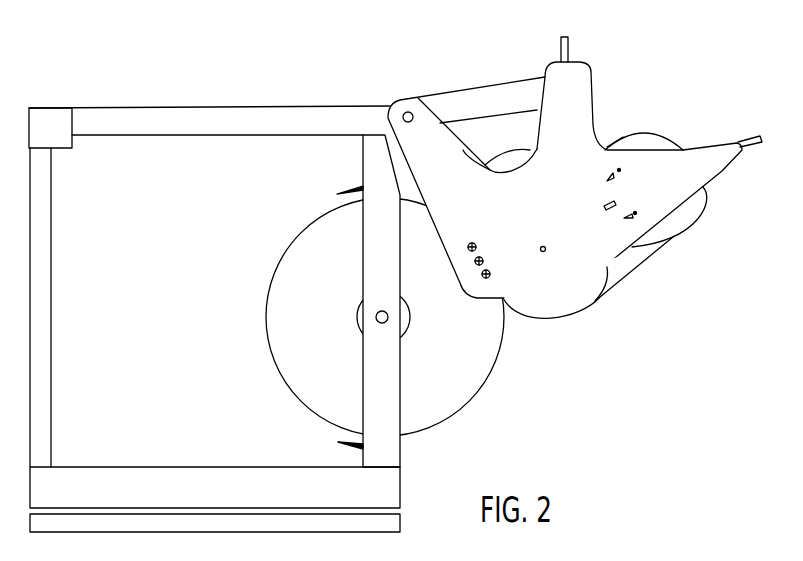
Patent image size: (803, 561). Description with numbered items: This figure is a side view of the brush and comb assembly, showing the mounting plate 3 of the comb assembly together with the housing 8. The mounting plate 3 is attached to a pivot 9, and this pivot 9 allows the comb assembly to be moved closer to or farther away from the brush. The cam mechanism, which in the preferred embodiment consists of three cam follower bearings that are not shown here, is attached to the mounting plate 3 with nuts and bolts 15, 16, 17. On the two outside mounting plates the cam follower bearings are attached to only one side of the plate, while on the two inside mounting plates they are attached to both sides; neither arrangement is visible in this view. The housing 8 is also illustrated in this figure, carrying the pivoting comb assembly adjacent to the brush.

The mounting plate 3 is at (463, 149).
The housing 8 is at (163, 101).
The pivot 9 is at (412, 112).
The nuts and bolts 15 is at (470, 250).
The nuts and bolts 16 is at (483, 261).
The nuts and bolts 17 is at (490, 276).